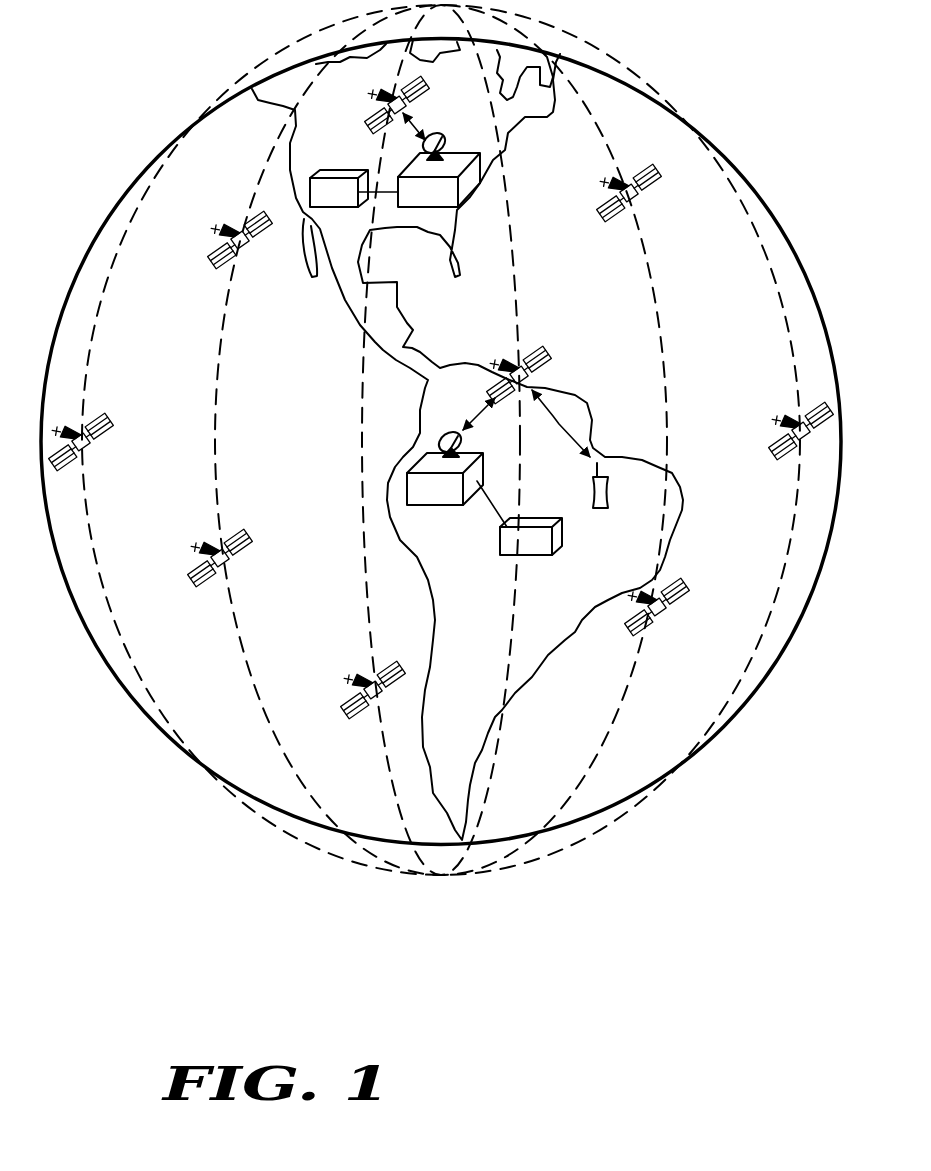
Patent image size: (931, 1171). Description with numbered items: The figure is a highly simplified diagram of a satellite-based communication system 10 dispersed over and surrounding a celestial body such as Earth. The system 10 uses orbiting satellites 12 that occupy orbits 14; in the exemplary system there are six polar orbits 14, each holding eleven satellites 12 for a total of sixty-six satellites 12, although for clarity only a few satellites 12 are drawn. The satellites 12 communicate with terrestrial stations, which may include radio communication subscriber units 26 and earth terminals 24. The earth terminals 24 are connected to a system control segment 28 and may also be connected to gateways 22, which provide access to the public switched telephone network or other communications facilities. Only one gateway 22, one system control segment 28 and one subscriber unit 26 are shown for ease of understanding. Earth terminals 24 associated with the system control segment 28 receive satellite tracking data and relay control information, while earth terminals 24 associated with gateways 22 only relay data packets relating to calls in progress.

The satellite-based communication system 10 is at (436, 965).
The satellite 12 is at (377, 123).
The orbit 14 is at (270, 157).
The gateway 22 is at (537, 555).
The earth terminal 24 is at (447, 153).
The subscriber unit 26 is at (600, 508).
The system control segment 28 is at (325, 207).